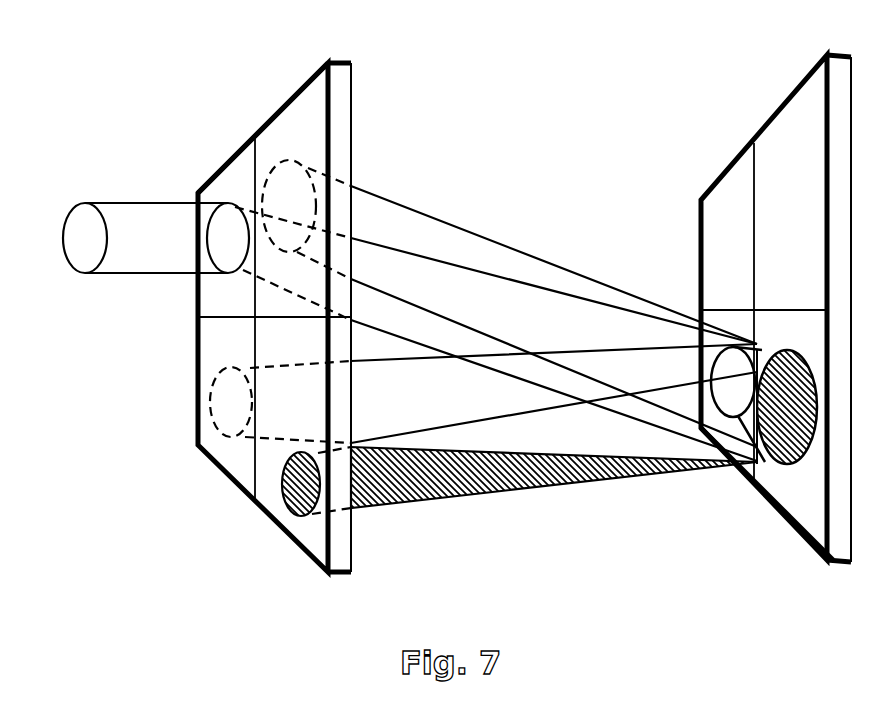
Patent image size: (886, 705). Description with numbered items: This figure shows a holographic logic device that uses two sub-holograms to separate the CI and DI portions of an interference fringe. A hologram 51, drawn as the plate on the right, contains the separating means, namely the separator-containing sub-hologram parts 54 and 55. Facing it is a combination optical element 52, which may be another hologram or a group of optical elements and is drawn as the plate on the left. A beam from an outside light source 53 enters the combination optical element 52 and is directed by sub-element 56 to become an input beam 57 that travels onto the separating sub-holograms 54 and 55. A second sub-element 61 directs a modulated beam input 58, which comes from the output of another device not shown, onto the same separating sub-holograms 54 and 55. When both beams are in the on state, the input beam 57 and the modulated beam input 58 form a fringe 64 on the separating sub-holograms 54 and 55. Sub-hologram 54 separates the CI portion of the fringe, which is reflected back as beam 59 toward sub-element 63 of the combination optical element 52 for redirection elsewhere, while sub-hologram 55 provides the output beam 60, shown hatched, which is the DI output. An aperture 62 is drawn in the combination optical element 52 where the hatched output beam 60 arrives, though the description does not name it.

The hologram 51 is at (787, 95).
The combination optical element 52 is at (265, 120).
The outside light source 53 is at (78, 238).
The separating sub-hologram 54 is at (741, 470).
The separating sub-hologram 55 is at (774, 483).
The sub-element 56 is at (222, 187).
The input beam 57 is at (368, 308).
The modulated beam input 58 is at (365, 407).
The reflected beam 59 is at (388, 215).
The output beam 60 is at (388, 470).
The sub-element 61 is at (230, 460).
The hatched aperture 62 is at (270, 494).
The sub-element 63 is at (300, 115).
The fringe 64 is at (762, 334).